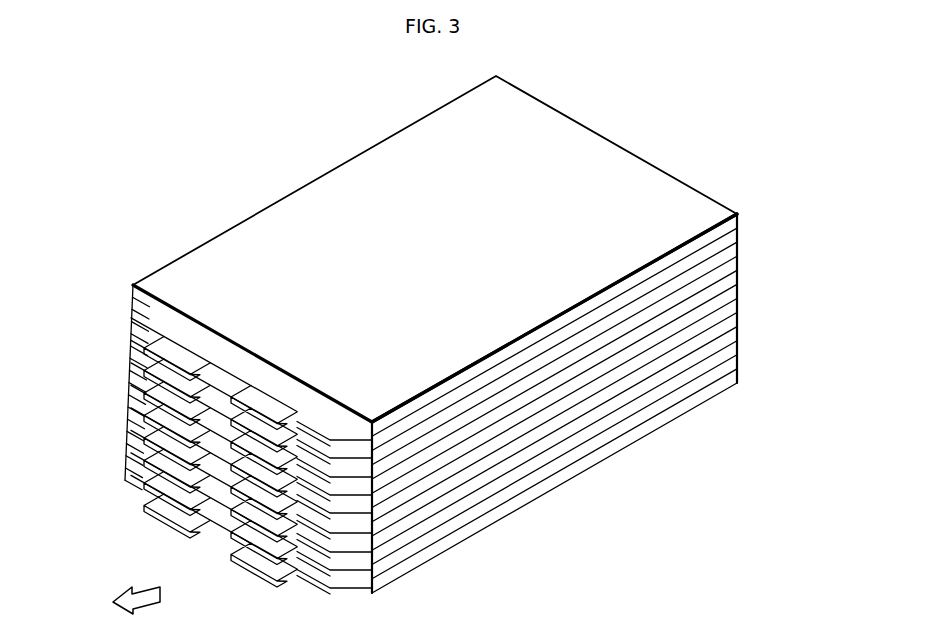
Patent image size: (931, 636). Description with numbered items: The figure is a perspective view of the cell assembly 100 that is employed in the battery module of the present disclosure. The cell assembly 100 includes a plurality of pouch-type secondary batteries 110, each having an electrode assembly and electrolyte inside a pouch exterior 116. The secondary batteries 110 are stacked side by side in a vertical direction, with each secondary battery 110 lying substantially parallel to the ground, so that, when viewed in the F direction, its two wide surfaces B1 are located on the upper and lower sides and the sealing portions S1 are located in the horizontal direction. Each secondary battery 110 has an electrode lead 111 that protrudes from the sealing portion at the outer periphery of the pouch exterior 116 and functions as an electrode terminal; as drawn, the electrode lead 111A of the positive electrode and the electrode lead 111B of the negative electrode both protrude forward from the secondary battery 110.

The cell assembly 100 is at (112, 256).
The secondary battery 110 is at (738, 223).
The electrode lead 111 is at (246, 179).
The electrode lead of the positive electrode 111A is at (175, 365).
The electrode lead of the negative electrode 111B is at (258, 410).
The pouch exterior 116 is at (567, 312).
The sealing portion S1 is at (343, 163).
The wide surface B1 is at (428, 157).